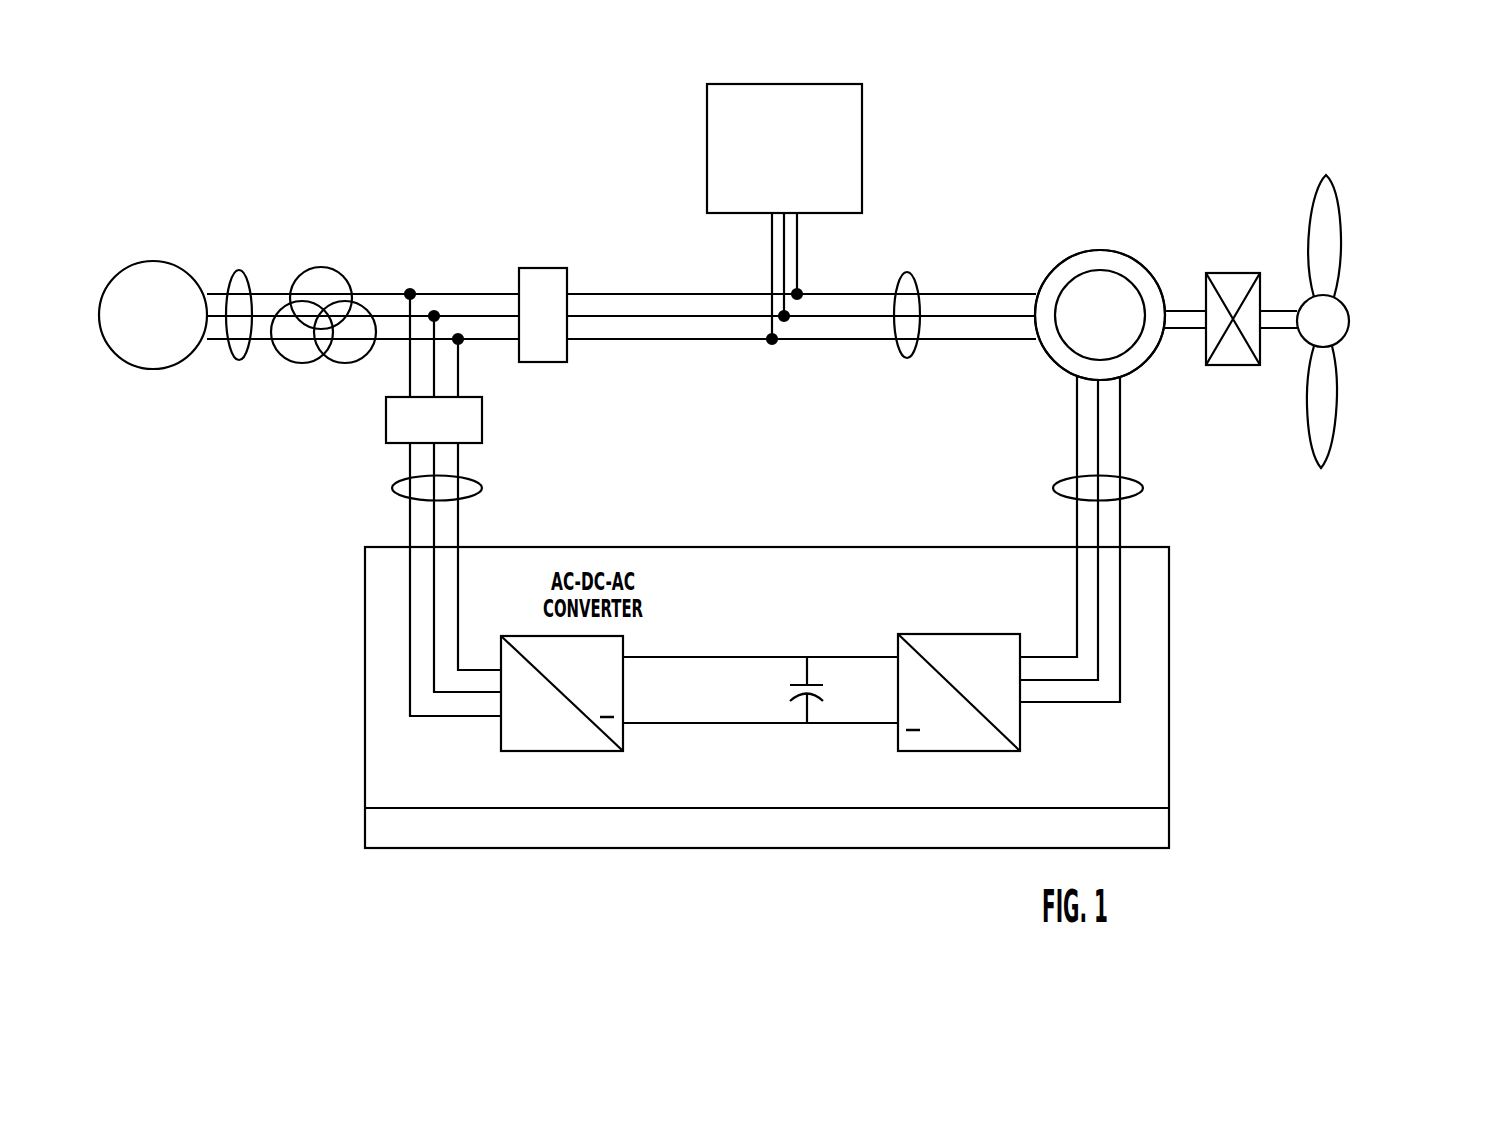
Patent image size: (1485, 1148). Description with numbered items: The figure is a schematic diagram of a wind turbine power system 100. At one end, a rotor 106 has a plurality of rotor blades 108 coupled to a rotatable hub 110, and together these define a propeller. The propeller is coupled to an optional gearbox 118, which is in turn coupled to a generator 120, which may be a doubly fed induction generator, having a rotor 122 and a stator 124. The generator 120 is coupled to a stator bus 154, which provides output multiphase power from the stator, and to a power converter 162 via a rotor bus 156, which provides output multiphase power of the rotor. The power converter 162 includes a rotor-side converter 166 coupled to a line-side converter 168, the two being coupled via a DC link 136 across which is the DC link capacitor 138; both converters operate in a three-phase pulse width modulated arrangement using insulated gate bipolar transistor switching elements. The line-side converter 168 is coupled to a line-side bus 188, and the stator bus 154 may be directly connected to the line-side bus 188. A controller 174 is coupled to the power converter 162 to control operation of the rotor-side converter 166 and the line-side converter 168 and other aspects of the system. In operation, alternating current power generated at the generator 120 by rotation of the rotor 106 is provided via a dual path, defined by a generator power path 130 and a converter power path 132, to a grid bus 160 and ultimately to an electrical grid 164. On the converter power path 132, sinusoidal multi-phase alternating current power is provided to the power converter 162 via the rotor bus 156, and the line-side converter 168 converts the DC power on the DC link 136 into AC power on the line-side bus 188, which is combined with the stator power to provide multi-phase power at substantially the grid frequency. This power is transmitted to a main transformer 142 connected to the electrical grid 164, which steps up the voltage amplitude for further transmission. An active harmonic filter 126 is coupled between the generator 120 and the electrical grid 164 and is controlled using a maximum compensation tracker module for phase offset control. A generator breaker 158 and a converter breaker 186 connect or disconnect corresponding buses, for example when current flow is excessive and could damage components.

The wind turbine power system 100 is at (708, 232).
The rotor 106 is at (1383, 318).
The rotor blades 108 is at (1339, 250).
The rotatable hub 110 is at (1350, 318).
The gearbox 118 is at (1240, 273).
The generator 120 is at (1101, 250).
The rotor 122 is at (1135, 286).
The stator 124 is at (1063, 262).
The active harmonic filter 126 is at (766, 203).
The generator power path 130 is at (990, 292).
The converter power path 132 is at (1129, 405).
The DC link 136 is at (818, 657).
The DC link capacitor 138 is at (800, 685).
The main transformer 142 is at (323, 262).
The stator bus 154 is at (907, 272).
The rotor bus 156 is at (1143, 488).
The generator breaker 158 is at (540, 268).
The grid bus 160 is at (239, 270).
The power converter 162 is at (1170, 627).
The electrical grid 164 is at (134, 332).
The rotor-side converter 166 is at (1020, 725).
The line-side converter 168 is at (500, 740).
The controller 174 is at (1170, 808).
The converter breaker 186 is at (386, 414).
The line-side bus 188 is at (393, 488).